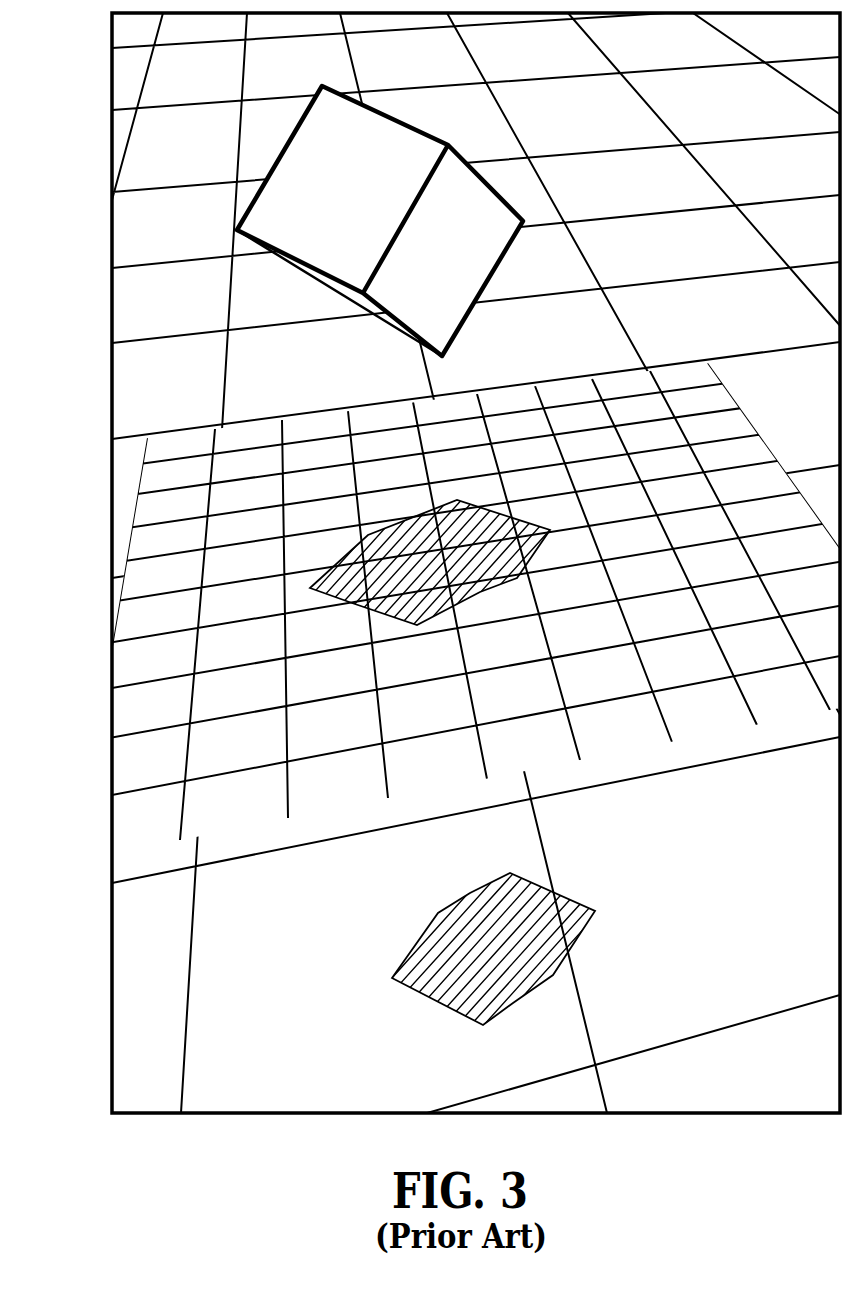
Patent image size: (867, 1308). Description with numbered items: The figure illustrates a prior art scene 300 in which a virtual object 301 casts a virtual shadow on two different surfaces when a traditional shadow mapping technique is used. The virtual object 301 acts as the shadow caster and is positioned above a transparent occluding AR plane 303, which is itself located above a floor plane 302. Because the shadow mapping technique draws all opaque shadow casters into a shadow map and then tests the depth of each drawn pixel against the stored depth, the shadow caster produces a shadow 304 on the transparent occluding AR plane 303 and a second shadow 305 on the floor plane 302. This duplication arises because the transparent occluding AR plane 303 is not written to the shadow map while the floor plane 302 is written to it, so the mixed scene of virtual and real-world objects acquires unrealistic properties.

The prior art scene 300 is at (817, 1090).
The virtual object 301 is at (270, 221).
The floor plane 302 is at (433, 602).
The transparent occluding AR plane 303 is at (442, 596).
The shadow 304 is at (288, 562).
The shadow 305 is at (316, 943).